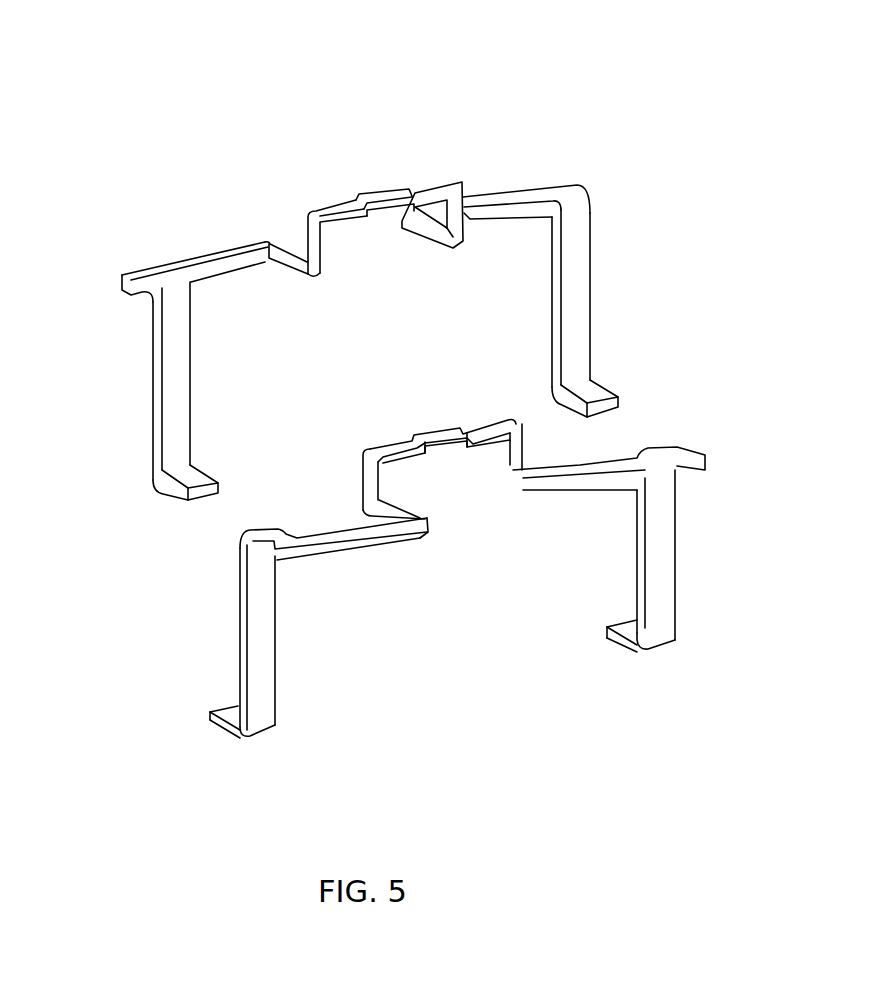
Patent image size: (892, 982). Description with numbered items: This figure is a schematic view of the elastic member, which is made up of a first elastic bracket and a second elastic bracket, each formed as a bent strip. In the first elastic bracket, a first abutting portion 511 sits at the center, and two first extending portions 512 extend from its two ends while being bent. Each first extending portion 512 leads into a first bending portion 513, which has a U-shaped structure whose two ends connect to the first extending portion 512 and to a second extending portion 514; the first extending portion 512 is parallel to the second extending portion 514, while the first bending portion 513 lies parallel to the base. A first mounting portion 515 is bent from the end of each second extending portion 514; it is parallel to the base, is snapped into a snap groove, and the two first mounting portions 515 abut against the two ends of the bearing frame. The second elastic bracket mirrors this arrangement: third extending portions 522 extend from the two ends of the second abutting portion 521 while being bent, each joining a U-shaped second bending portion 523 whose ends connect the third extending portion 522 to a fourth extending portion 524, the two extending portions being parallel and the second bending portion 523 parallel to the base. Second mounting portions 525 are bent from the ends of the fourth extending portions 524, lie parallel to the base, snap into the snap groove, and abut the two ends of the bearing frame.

The first abutting portion 511 is at (369, 198).
The first extending portion 512 is at (313, 240).
The first bending portion 513 is at (228, 267).
The second extending portion 514 is at (177, 367).
The first mounting portion 515 is at (173, 490).
The second abutting portion 521 is at (458, 443).
The third extending portion 522 is at (383, 473).
The second bending portion 523 is at (357, 537).
The fourth extending portion 524 is at (252, 643).
The second mounting portion 525 is at (212, 716).